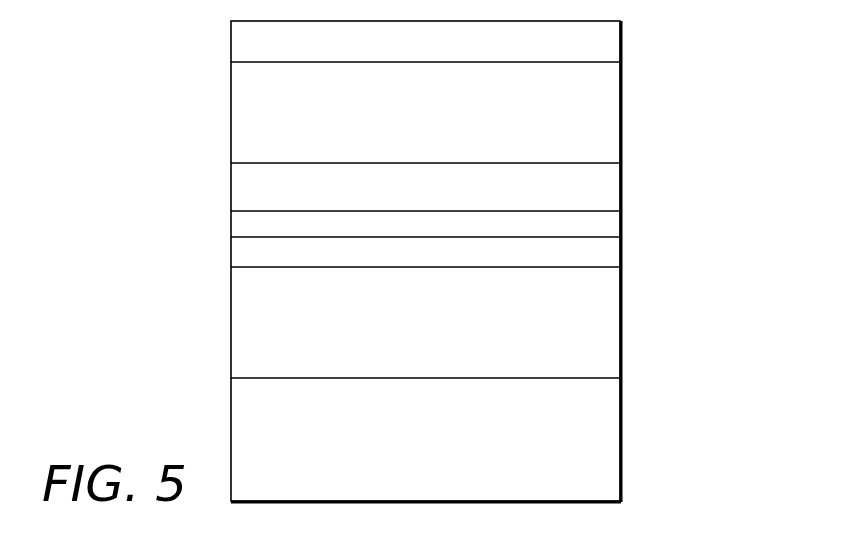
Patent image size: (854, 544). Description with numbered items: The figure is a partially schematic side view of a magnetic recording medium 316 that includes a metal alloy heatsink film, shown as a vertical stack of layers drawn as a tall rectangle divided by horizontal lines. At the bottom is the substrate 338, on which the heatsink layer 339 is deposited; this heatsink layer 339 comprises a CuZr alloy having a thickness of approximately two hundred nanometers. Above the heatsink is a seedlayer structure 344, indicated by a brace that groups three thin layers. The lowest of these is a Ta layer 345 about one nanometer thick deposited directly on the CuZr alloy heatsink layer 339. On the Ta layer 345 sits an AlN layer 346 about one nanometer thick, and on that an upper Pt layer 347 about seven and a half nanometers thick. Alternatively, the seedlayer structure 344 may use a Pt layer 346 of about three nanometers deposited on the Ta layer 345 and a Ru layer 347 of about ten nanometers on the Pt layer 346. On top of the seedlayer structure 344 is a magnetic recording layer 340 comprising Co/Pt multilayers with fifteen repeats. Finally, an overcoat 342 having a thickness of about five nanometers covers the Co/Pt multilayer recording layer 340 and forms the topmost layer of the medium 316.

The magnetic recording medium 316 is at (138, 103).
The substrate 338 is at (607, 443).
The metal alloy heatsink film 339 is at (610, 321).
The magnetic recording layer 340 is at (607, 116).
The overcoat 342 is at (610, 43).
The seedlayer structure 344 is at (220, 163).
The Ta layer 345 is at (610, 254).
The AlN layer 346 is at (612, 227).
The Pt layer 347 is at (612, 187).